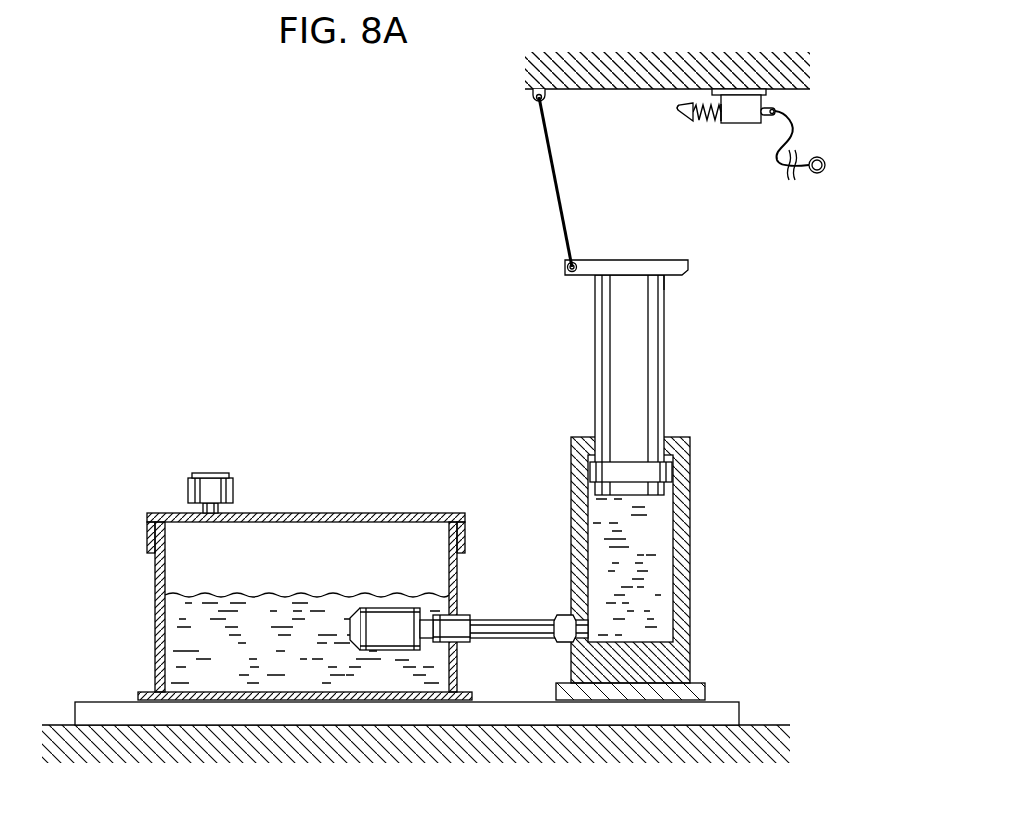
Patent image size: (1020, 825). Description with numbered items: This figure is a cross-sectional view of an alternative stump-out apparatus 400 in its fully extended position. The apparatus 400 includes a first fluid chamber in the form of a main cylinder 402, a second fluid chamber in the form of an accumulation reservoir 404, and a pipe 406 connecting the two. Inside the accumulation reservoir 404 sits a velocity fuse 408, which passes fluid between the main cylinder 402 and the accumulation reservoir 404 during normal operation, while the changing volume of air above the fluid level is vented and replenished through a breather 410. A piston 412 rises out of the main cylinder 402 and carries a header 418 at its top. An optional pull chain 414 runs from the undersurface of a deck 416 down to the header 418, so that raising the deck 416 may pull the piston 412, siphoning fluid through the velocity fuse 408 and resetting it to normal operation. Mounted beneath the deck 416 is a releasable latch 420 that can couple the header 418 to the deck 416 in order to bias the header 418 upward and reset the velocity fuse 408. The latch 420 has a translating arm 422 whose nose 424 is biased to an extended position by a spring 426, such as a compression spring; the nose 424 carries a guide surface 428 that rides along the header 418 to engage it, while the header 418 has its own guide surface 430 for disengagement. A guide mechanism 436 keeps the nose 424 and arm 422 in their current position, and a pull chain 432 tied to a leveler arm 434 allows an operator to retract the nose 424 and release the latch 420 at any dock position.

The stump-out apparatus 400 is at (303, 272).
The main cylinder 402 is at (690, 560).
The accumulation reservoir 404 is at (295, 512).
The pipe 406 is at (515, 615).
The velocity fuse 408 is at (393, 607).
The breather 410 is at (210, 470).
The piston 412 is at (665, 368).
The pull chain 414 is at (550, 153).
The deck 416 is at (783, 92).
The header 418 is at (647, 258).
The releasable latch 420 is at (722, 192).
The translating arm 422 is at (702, 122).
The nose 424 is at (680, 105).
The spring 426 is at (713, 122).
The guide surface 428 is at (683, 113).
The guide surface 430 is at (682, 277).
The pull chain 432 is at (800, 172).
The leveler arm 434 is at (763, 125).
The guide mechanism 436 is at (740, 95).